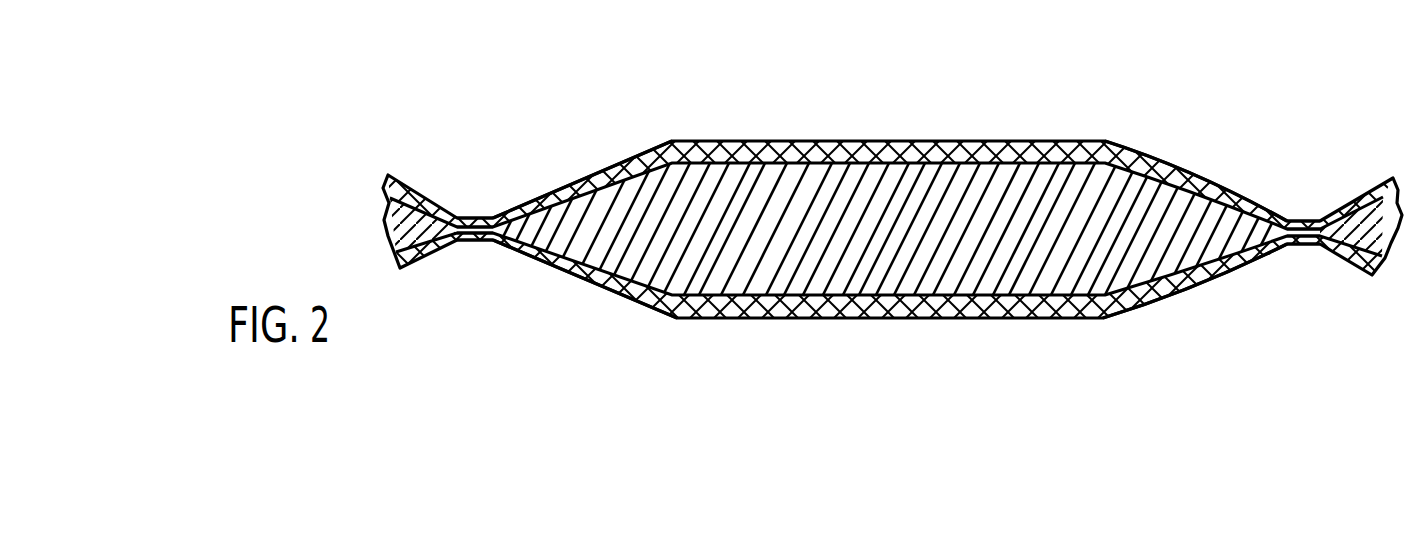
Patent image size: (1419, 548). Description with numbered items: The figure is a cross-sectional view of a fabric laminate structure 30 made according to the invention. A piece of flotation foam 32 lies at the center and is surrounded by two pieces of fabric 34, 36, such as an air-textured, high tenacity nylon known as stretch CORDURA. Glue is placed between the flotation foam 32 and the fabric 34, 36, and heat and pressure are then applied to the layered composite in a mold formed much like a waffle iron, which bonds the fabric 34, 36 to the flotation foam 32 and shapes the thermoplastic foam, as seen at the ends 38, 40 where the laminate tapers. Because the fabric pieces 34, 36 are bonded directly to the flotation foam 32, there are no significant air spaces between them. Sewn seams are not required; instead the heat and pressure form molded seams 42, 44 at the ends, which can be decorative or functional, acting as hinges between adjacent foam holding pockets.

The fabric laminate structure 30 is at (747, 107).
The flotation foam 32 is at (820, 200).
The fabric 34 is at (925, 153).
The fabric 36 is at (907, 320).
The end 38 is at (572, 225).
The end 40 is at (1223, 227).
The molded seam 42 is at (482, 215).
The molded seam 44 is at (1303, 230).